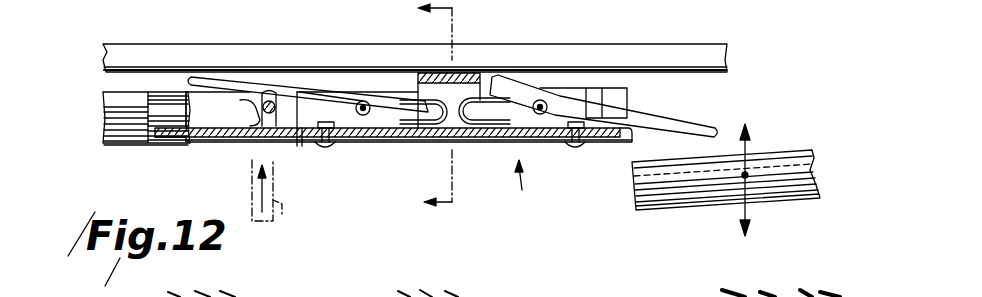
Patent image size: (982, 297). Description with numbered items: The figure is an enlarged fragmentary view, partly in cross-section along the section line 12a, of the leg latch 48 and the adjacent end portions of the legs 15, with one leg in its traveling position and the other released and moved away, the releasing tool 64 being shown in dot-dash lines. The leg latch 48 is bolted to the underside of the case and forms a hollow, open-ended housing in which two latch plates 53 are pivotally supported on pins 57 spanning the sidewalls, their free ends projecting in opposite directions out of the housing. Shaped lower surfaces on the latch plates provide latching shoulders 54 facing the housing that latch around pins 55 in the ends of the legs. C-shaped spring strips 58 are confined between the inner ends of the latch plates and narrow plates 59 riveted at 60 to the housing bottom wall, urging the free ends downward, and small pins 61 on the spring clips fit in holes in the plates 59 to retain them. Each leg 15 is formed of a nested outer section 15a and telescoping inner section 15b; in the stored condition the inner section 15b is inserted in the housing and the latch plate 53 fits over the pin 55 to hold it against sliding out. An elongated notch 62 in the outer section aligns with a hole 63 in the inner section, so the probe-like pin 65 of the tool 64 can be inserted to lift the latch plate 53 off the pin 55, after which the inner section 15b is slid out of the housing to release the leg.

The section line 12a- 12a is at (413, 109).
The leg 15 is at (120, 149).
The outer leg section 15a is at (143, 146).
The inner leg section 15b is at (250, 191).
The leg latch 48 is at (532, 188).
The latch plate 53 is at (362, 82).
The latching shoulder 54 is at (293, 95).
The pin 55 is at (320, 140).
The fulcrum pin 57 is at (470, 66).
The C-shaped spring strip 58 is at (484, 86).
The narrow plate 59 is at (343, 142).
The rivet 60 is at (285, 150).
The small pin 61 is at (393, 142).
The elongated notch 62 is at (236, 143).
The hole 63 is at (253, 117).
The releasing tool 64 is at (283, 208).
The probe-like pin 65 is at (253, 100).